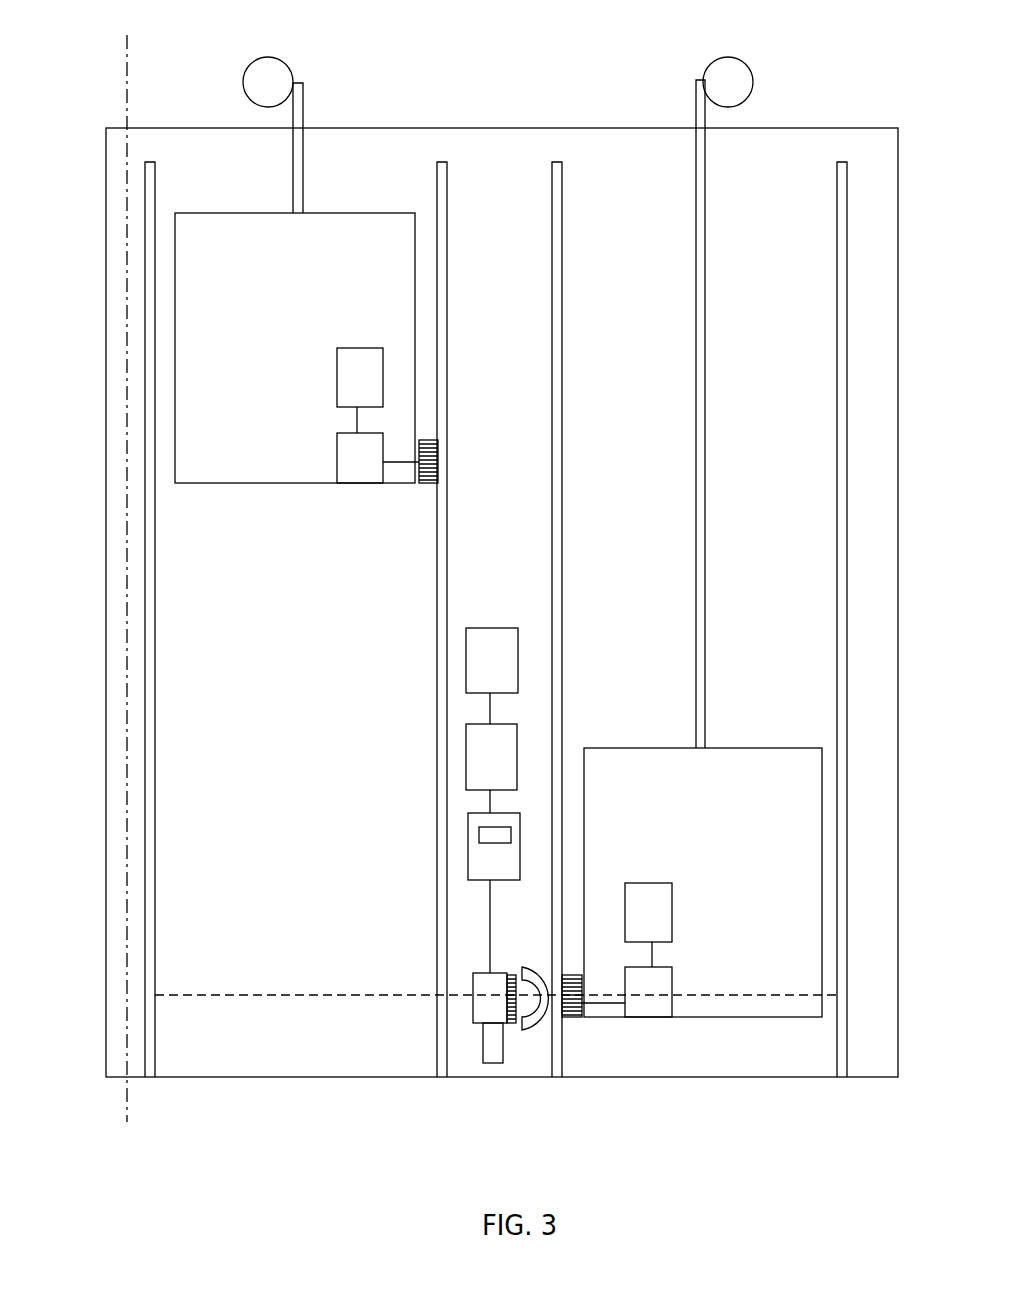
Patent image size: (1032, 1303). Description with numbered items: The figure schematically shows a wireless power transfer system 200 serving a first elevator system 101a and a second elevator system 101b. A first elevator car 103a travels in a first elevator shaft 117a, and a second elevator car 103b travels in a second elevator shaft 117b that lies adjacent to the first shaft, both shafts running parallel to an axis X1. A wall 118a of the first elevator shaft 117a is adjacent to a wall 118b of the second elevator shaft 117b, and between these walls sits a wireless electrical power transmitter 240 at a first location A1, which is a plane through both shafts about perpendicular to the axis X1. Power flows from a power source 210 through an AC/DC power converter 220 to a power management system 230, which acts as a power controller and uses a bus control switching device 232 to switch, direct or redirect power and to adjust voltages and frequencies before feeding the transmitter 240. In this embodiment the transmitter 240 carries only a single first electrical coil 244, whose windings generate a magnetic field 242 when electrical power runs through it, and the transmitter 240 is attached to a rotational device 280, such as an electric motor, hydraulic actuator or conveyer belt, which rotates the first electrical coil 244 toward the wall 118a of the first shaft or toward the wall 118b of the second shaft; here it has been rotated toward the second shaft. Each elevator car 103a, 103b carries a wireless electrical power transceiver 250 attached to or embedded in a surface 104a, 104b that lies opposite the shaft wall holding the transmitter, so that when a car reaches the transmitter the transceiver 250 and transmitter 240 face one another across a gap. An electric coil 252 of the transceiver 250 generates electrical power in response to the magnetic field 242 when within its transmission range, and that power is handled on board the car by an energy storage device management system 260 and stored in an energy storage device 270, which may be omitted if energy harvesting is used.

The first elevator system 101a is at (84, 140).
The second elevator system 101b is at (498, 140).
The wireless power transfer system 200 is at (806, 150).
The first elevator car 103a is at (293, 270).
The second elevator car 103b is at (715, 833).
The surface of the first elevator car 104a is at (415, 317).
The surface of the second elevator car 104b is at (658, 750).
The first elevator shaft 117a is at (295, 628).
The second elevator shaft 117b is at (655, 643).
The wall of the first elevator shaft 118a is at (437, 932).
The wall of the second elevator shaft 118b is at (562, 442).
The power source 210 is at (466, 670).
The AC/DC power converter 220 is at (466, 757).
The power management system 230 is at (483, 857).
The bus control switching device 232 is at (487, 837).
The wireless electrical power transmitter 240 is at (483, 1023).
The magnetic field 242 is at (535, 1020).
The first electrical coil 244 is at (510, 975).
The wireless electrical power transceiver 250 is at (428, 485).
The electric coil 252 is at (430, 438).
The energy storage device management system 260 is at (352, 477).
The energy storage device 270 is at (350, 370).
The rotational device 280 is at (490, 1063).
The axis X1 is at (127, 1048).
The first location A1 is at (303, 997).